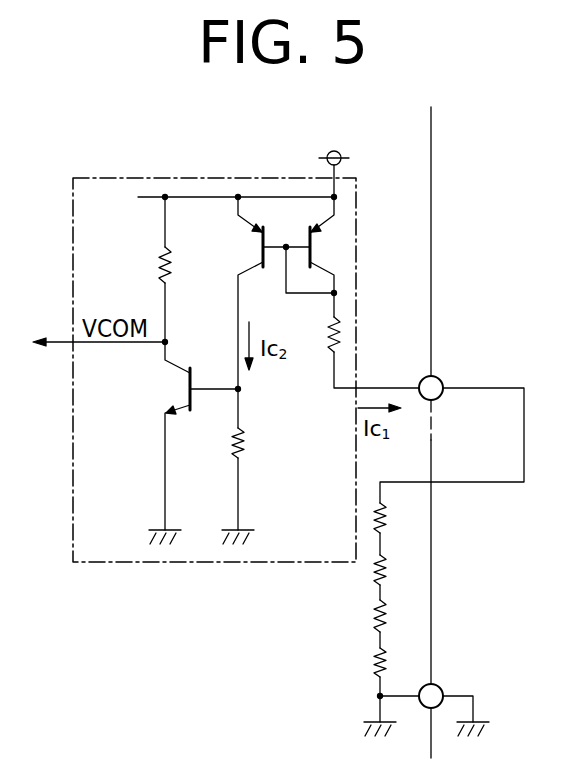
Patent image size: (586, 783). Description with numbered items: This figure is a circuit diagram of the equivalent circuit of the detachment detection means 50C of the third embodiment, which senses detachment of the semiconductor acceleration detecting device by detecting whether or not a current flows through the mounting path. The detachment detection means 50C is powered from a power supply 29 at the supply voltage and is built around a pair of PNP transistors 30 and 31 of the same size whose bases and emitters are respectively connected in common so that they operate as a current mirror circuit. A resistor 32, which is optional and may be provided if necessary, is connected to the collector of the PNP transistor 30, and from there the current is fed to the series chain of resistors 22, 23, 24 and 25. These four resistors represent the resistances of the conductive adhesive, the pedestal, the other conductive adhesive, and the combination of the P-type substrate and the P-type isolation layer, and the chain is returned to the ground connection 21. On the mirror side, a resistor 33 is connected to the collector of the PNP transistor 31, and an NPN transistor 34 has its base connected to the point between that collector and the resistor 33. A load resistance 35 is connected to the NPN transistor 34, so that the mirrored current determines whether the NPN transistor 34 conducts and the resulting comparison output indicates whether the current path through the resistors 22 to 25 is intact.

The ground connection 21 is at (478, 712).
The resistor 22 is at (390, 520).
The resistor 23 is at (390, 570).
The resistor 24 is at (390, 617).
The resistor 25 is at (390, 664).
The power supply 29 is at (350, 161).
The PNP transistor 30 is at (325, 247).
The PNP transistor 31 is at (255, 247).
The resistor 32 is at (345, 327).
The resistor 33 is at (250, 452).
The NPN transistor 34 is at (178, 389).
The load resistance 35 is at (160, 259).
The detachment detection means 50C is at (177, 178).